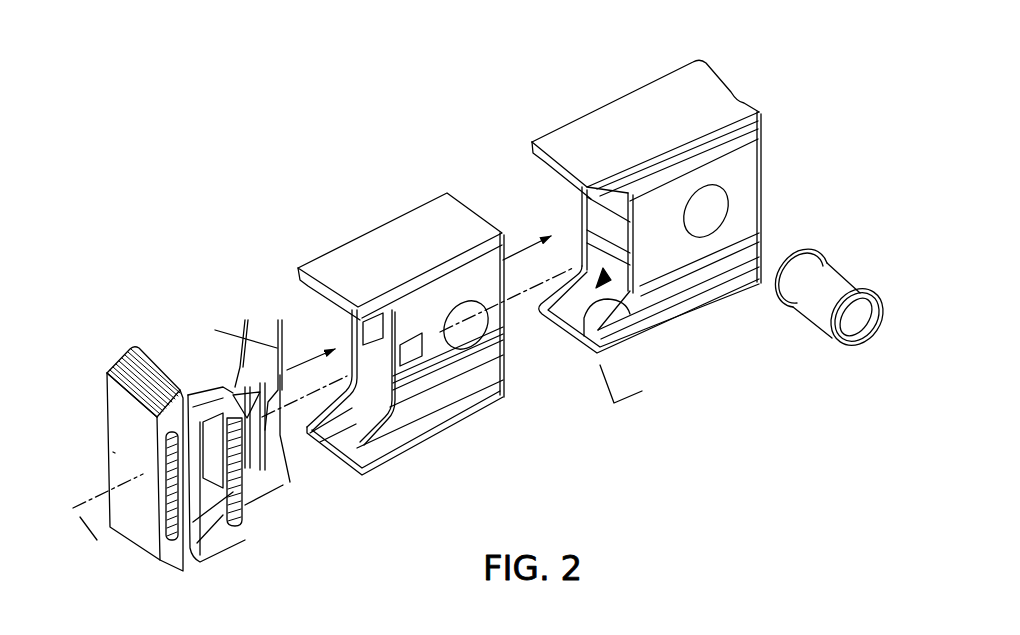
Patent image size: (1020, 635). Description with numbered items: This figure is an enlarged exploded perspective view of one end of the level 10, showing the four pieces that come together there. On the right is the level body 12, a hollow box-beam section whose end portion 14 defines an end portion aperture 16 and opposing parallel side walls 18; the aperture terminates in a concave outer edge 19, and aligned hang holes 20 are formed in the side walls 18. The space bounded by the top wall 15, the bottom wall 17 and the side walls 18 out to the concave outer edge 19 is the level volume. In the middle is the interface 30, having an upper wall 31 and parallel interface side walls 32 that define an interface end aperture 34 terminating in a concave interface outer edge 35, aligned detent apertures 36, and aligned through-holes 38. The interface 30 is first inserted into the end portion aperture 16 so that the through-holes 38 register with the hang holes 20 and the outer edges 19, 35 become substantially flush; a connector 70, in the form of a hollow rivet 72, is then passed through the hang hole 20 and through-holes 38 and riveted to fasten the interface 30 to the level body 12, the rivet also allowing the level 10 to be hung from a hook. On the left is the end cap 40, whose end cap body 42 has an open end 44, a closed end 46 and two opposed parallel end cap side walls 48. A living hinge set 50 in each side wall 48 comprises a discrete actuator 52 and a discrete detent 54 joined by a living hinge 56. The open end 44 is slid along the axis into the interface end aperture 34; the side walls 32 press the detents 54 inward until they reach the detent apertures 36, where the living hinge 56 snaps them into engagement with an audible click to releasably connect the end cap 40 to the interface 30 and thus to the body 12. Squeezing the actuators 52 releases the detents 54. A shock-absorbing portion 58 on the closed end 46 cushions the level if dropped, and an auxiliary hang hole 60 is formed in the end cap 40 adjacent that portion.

The level 10 is at (333, 137).
The level body 12 is at (663, 100).
The end portion 14 is at (563, 148).
The top wall 15 is at (628, 112).
The end portion aperture 16 is at (565, 318).
The bottom wall 17 is at (583, 330).
The side walls 18 is at (580, 212).
The concave outer edge 19 is at (563, 167).
The hang holes 20 is at (712, 218).
The interface 30 is at (396, 240).
The upper wall 31 is at (417, 220).
The interface side walls 32 is at (403, 403).
The interface end aperture 34 is at (352, 333).
The concave interface outer edge 35 is at (330, 287).
The detent apertures 36 is at (373, 325).
The through-holes 38 is at (456, 332).
The end cap 40 is at (217, 313).
The end cap body 42 is at (173, 350).
The open end 44 is at (283, 478).
The closed end 46 is at (148, 353).
The end cap side walls 48 is at (237, 508).
The living hinge set 50 is at (232, 500).
The actuator 52 is at (233, 503).
The detent 54 is at (215, 370).
The living hinge 56 is at (246, 320).
The shock-absorbing portion 58 is at (123, 433).
The auxiliary hang hole 60 is at (197, 460).
The connector 70 is at (838, 350).
The hollow rivet 72 is at (817, 308).